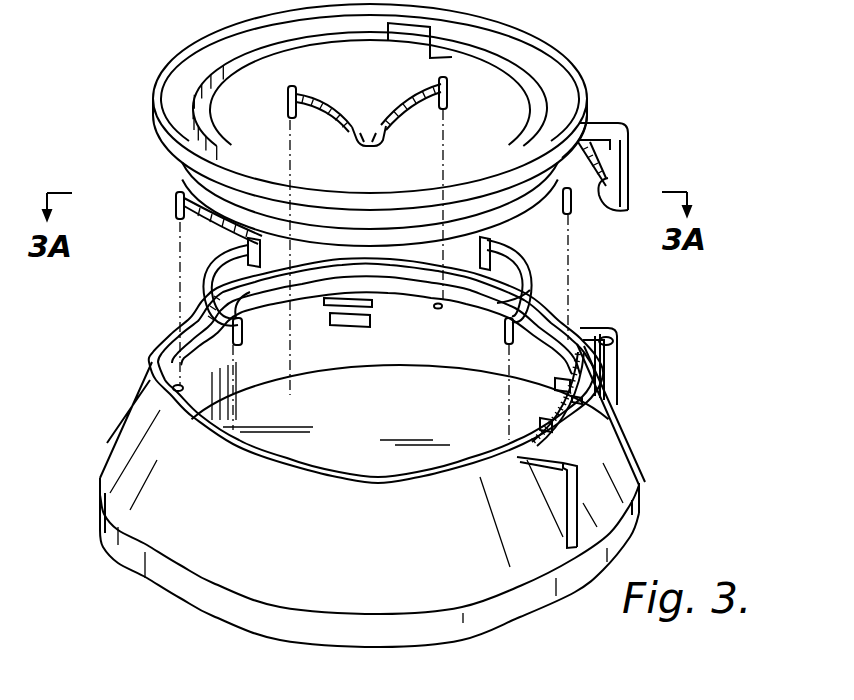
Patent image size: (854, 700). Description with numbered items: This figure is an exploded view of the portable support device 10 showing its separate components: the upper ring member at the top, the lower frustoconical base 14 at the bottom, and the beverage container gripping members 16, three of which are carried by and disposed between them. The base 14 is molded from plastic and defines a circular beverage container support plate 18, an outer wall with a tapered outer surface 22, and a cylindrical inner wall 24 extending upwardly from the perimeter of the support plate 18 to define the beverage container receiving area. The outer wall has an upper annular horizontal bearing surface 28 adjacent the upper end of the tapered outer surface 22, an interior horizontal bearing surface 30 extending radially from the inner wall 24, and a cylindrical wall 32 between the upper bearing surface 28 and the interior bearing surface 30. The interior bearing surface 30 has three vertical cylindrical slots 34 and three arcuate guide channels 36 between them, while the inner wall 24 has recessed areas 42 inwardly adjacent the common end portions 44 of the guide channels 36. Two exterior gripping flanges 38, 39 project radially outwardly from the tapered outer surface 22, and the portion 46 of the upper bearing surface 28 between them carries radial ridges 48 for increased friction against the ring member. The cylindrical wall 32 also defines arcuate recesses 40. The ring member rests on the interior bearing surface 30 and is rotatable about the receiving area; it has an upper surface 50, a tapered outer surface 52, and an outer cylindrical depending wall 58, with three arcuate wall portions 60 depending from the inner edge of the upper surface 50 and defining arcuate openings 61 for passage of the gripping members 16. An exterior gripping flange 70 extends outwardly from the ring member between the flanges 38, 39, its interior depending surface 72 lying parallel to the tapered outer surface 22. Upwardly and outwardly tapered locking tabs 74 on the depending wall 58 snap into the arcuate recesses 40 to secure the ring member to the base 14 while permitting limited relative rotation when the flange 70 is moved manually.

The portable support device 10 is at (533, 0).
The lower frustoconical base 14 is at (628, 372).
The beverage container gripping members 16 is at (417, 90).
The beverage container support plate 18 is at (383, 416).
The tapered outer surface 22 is at (625, 415).
The cylindrical inner wall 24 is at (247, 372).
The upper annular horizontal bearing surface 28 is at (273, 466).
The interior horizontal bearing surface 30 is at (560, 362).
The cylindrical wall 32 is at (540, 320).
The vertical cylindrical slots 34 is at (183, 385).
The arcuate guide channels 36 is at (567, 383).
The exterior gripping flange 38 is at (613, 337).
The exterior gripping flange 39 is at (560, 463).
The arcuate recesses 40 is at (240, 318).
The recessed areas 42 is at (360, 320).
The common end portions 44 is at (383, 257).
The portion of upper bearing surface 46 is at (585, 407).
The radial ridges 48 is at (577, 400).
The upper surface 50 is at (543, 63).
The tapered outer surface 52 is at (545, 168).
The outer cylindrical depending wall 58 is at (292, 230).
The arcuate wall portions 60 is at (258, 72).
The arcuate openings 61 is at (307, 50).
The exterior gripping flange 70 is at (606, 150).
The interior depending surface 72 is at (600, 210).
The locking tabs 74 is at (193, 193).